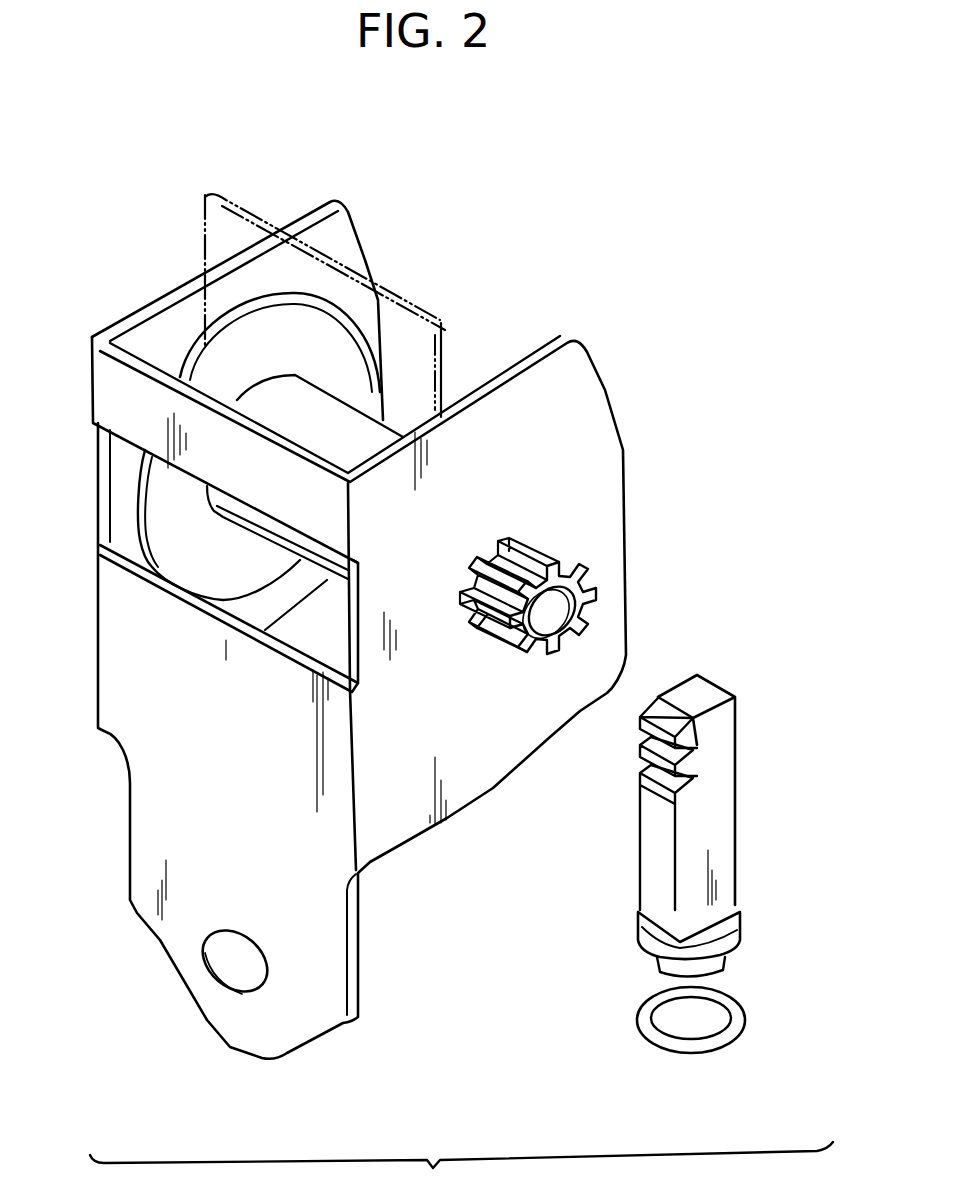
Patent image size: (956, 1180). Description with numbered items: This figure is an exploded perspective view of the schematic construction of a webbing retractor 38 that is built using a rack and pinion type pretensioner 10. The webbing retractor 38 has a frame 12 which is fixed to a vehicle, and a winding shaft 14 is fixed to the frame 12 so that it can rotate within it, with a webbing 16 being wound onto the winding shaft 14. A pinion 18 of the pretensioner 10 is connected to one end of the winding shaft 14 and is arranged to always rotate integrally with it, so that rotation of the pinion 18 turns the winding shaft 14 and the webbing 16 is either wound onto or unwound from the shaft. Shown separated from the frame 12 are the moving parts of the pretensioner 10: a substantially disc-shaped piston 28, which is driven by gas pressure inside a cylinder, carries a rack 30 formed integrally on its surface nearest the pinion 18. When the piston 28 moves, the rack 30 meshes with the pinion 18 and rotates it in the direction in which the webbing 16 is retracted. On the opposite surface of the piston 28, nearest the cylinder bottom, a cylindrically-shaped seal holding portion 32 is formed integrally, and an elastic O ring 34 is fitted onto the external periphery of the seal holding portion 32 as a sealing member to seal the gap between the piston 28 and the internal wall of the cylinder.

The pretensioner 10 is at (683, 637).
The frame 12 is at (594, 411).
The winding shaft 14 is at (557, 600).
The webbing 16 is at (213, 237).
The pinion 18 is at (492, 620).
The piston 28 is at (740, 933).
The rack 30 is at (722, 752).
The seal holding portion 32 is at (728, 960).
The O ring 34 is at (737, 1023).
The webbing retractor 38 is at (523, 197).